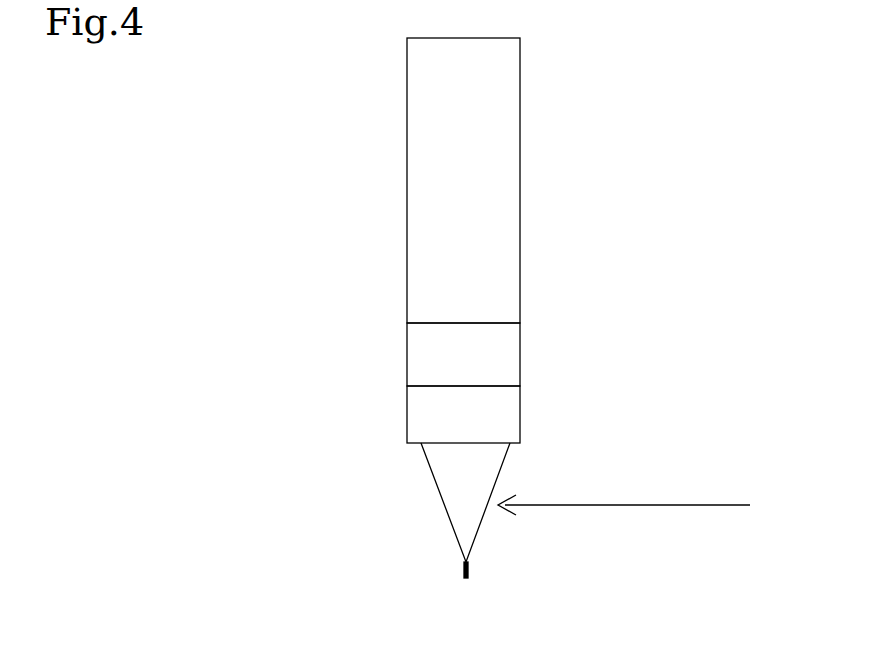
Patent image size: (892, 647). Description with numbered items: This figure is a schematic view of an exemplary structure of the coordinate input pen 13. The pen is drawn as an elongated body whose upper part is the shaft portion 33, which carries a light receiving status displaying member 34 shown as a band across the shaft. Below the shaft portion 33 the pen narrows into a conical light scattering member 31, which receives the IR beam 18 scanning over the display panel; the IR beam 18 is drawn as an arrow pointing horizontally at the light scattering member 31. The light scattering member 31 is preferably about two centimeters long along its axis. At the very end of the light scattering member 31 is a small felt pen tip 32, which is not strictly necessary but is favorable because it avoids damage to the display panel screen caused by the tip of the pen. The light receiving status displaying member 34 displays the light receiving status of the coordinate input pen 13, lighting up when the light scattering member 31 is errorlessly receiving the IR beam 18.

The coordinate input pen 13 is at (336, 227).
The IR beam 18 is at (622, 505).
The light scattering member 31 is at (434, 482).
The felt pen tip 32 is at (470, 572).
The shaft portion 33 is at (520, 208).
The light receiving status displaying member 34 is at (520, 362).